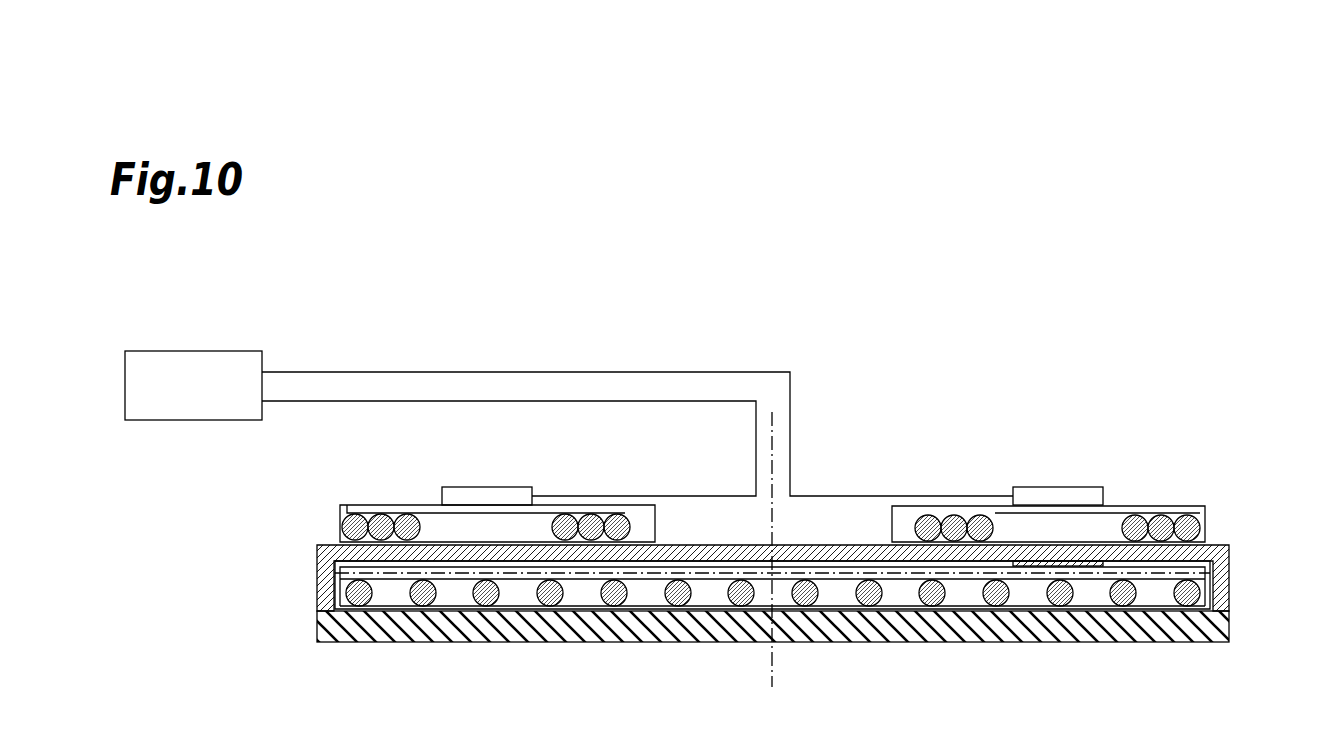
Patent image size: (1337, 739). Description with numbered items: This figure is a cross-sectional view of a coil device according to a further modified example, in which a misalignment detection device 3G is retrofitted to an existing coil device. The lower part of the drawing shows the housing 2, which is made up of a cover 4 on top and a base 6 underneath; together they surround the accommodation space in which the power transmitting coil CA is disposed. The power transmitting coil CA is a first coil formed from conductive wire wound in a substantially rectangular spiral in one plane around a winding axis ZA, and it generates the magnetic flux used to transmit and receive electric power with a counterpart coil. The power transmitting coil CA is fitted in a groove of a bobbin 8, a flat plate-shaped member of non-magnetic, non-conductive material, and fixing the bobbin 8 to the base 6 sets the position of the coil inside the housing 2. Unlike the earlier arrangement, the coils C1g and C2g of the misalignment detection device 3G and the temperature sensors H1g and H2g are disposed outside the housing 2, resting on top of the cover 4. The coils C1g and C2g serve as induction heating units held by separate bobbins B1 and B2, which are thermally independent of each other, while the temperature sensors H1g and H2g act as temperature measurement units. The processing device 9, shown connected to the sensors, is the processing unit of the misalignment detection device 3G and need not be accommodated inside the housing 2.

The misalignment detection device 3G is at (1078, 354).
The processing device 9 is at (190, 351).
The temperature sensor H1g is at (490, 487).
The temperature sensor H2g is at (1062, 487).
The bobbin B1 is at (381, 505).
The bobbin B2 is at (1165, 506).
The coil C1g is at (430, 511).
The coil C2g is at (1115, 513).
The housing 2 is at (1296, 533).
The cover 4 is at (1231, 578).
The base 6 is at (1231, 628).
The bobbin 8 is at (334, 563).
The power transmitting coil CA is at (757, 606).
The winding axis ZA is at (772, 672).